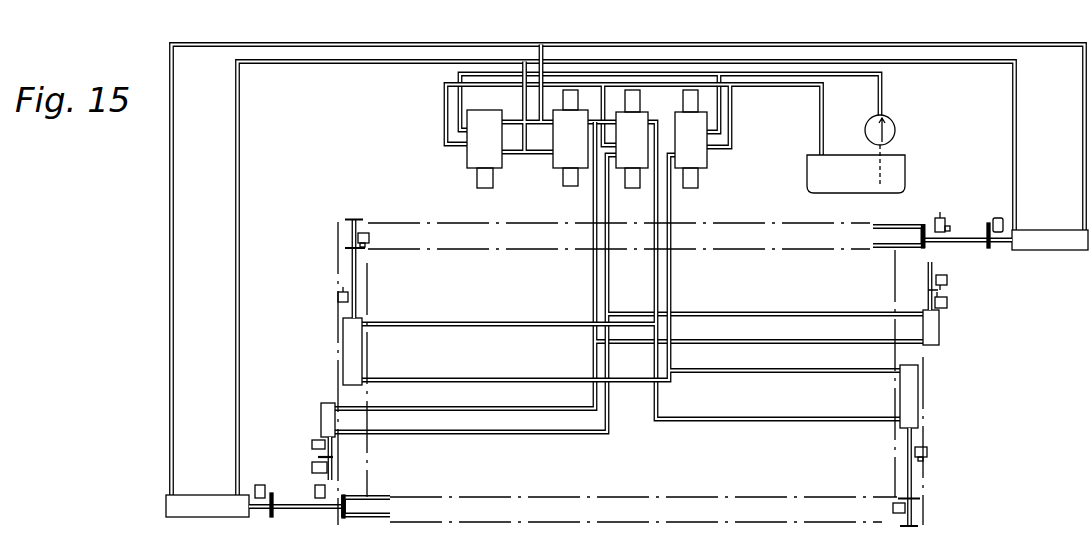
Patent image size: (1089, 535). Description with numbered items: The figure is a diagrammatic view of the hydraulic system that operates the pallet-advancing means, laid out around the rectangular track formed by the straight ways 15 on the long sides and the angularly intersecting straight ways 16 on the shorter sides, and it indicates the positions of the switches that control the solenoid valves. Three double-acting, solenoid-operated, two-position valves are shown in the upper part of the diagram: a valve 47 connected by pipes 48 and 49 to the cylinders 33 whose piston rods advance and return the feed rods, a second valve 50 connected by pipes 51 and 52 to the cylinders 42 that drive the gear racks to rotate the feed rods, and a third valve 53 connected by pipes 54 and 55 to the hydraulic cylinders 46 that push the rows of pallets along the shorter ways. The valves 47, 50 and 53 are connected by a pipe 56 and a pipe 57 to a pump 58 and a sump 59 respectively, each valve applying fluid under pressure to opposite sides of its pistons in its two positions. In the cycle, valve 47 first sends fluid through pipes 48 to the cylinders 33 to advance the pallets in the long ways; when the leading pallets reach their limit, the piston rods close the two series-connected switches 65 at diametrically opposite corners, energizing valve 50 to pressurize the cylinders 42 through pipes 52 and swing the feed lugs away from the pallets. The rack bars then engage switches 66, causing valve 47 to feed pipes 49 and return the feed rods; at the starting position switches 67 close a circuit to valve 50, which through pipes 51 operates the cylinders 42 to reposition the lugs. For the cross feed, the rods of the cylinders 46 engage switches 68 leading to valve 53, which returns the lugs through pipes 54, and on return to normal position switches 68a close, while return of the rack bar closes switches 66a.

The straight ways 15 is at (460, 217).
The straight ways 16 is at (331, 376).
The cylinder 33 is at (228, 512).
The cylinder 42 is at (320, 412).
The hydraulic cylinder 46 is at (357, 342).
The double-acting valve 47 is at (562, 154).
The pipes 48 is at (358, 47).
The pipes 49 is at (406, 63).
The double-acting valve 50 is at (640, 126).
The pipes 51 is at (592, 273).
The pipes 52 is at (608, 287).
The double-acting valve 53 is at (694, 157).
The pipes 54 is at (671, 273).
The pipes 55 is at (659, 300).
The pipe 56 is at (790, 88).
The pipe 57 is at (858, 76).
The pump 58 is at (894, 125).
The sump 59 is at (897, 165).
The switches 65 is at (320, 499).
The switches 66 is at (312, 442).
The switches 66a is at (312, 467).
The switches 67 is at (260, 485).
The switches 68 is at (337, 297).
The switches 68a is at (370, 238).